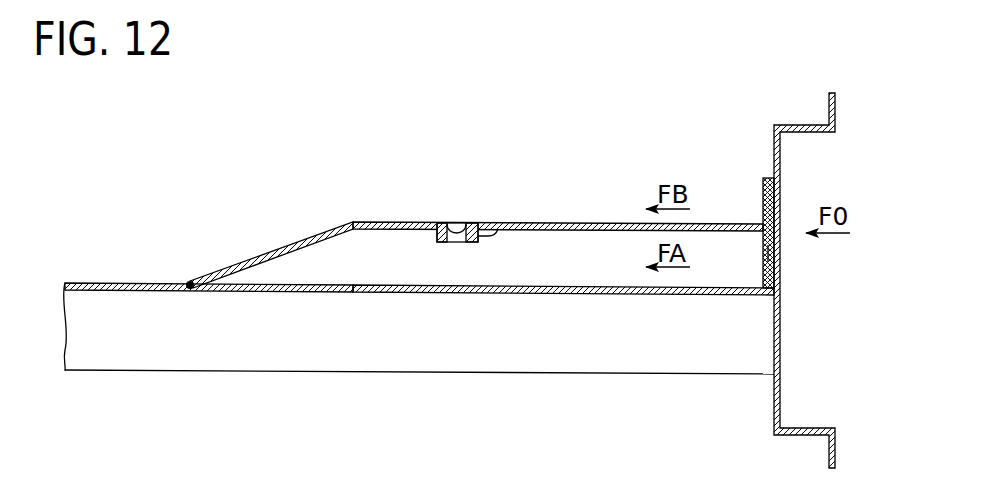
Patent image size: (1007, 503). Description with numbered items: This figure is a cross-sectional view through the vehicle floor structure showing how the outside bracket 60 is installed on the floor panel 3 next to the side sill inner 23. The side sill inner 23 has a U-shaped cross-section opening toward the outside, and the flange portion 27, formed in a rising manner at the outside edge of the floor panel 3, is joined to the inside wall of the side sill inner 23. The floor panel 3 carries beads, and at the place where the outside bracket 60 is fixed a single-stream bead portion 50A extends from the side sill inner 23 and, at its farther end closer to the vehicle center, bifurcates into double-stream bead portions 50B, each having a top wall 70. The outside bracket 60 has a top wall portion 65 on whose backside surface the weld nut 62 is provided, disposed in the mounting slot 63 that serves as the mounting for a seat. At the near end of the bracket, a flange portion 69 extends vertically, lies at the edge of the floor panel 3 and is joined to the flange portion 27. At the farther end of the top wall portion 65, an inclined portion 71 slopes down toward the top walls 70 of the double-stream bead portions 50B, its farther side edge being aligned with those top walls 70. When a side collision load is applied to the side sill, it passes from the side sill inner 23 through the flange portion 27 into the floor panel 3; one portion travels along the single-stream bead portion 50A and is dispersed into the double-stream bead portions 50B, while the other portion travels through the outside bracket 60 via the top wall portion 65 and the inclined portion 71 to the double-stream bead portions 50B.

The floor panel 3 is at (419, 346).
The single-stream bead portion 50A is at (558, 287).
The double-stream bead portion 50B is at (103, 283).
The top wall 70 is at (419, 286).
The inclined portion 71 is at (267, 251).
The outside bracket 60 is at (476, 206).
The top wall portion 65 is at (584, 222).
The mounting slot 63 is at (455, 223).
The weld nut 62 is at (498, 228).
The flange portion 69 is at (763, 195).
The side sill inner 23 is at (803, 125).
The flange portion 27 is at (770, 252).